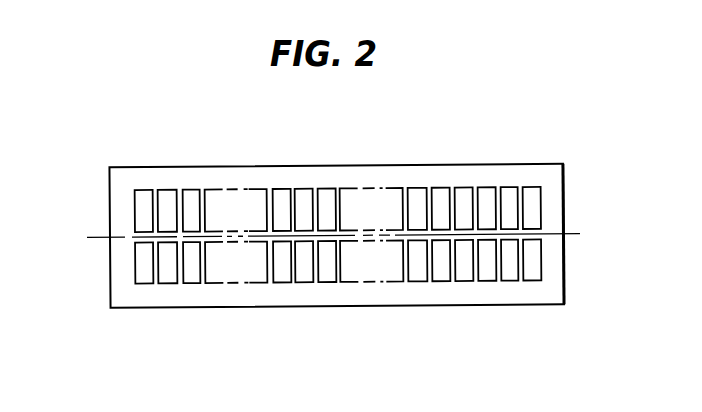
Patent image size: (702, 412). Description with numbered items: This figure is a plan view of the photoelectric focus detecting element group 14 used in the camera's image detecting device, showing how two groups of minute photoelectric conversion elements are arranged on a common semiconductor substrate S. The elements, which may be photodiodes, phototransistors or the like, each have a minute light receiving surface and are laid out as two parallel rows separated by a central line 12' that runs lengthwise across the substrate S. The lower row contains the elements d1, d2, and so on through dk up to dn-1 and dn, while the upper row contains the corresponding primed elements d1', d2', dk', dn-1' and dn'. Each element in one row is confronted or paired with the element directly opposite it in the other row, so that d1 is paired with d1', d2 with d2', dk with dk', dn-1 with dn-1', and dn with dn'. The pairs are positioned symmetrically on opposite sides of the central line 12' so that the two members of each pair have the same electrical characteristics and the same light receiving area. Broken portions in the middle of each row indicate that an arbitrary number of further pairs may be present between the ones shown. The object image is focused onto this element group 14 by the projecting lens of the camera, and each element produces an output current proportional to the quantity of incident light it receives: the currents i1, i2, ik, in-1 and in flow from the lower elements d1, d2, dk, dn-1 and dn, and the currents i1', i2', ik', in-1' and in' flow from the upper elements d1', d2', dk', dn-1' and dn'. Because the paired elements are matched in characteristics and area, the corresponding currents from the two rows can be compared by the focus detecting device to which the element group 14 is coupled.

The common semiconductor substrate S is at (382, 165).
The photoelectric focus detecting element group 14 is at (558, 182).
The central line 12' is at (349, 212).
The photoelectric conversion element d1' is at (135, 160).
The photoelectric conversion element d2' is at (167, 160).
The photoelectric conversion element dk' is at (292, 160).
The photoelectric conversion element dn-1' is at (502, 158).
The photoelectric conversion element dn' is at (550, 158).
The output current i1' is at (136, 179).
The output current i2' is at (167, 179).
The output current ik' is at (279, 179).
The output current in-1' is at (494, 178).
The output current in' is at (532, 178).
The photoelectric conversion element d1 is at (125, 309).
The photoelectric conversion element d2 is at (165, 309).
The photoelectric conversion element dk is at (292, 308).
The photoelectric conversion element dn-1 is at (503, 306).
The photoelectric conversion element dn is at (555, 305).
The output current i1 is at (140, 294).
The output current i2 is at (170, 294).
The output current ik is at (281, 294).
The output current in-1 is at (492, 291).
The output current in is at (540, 290).